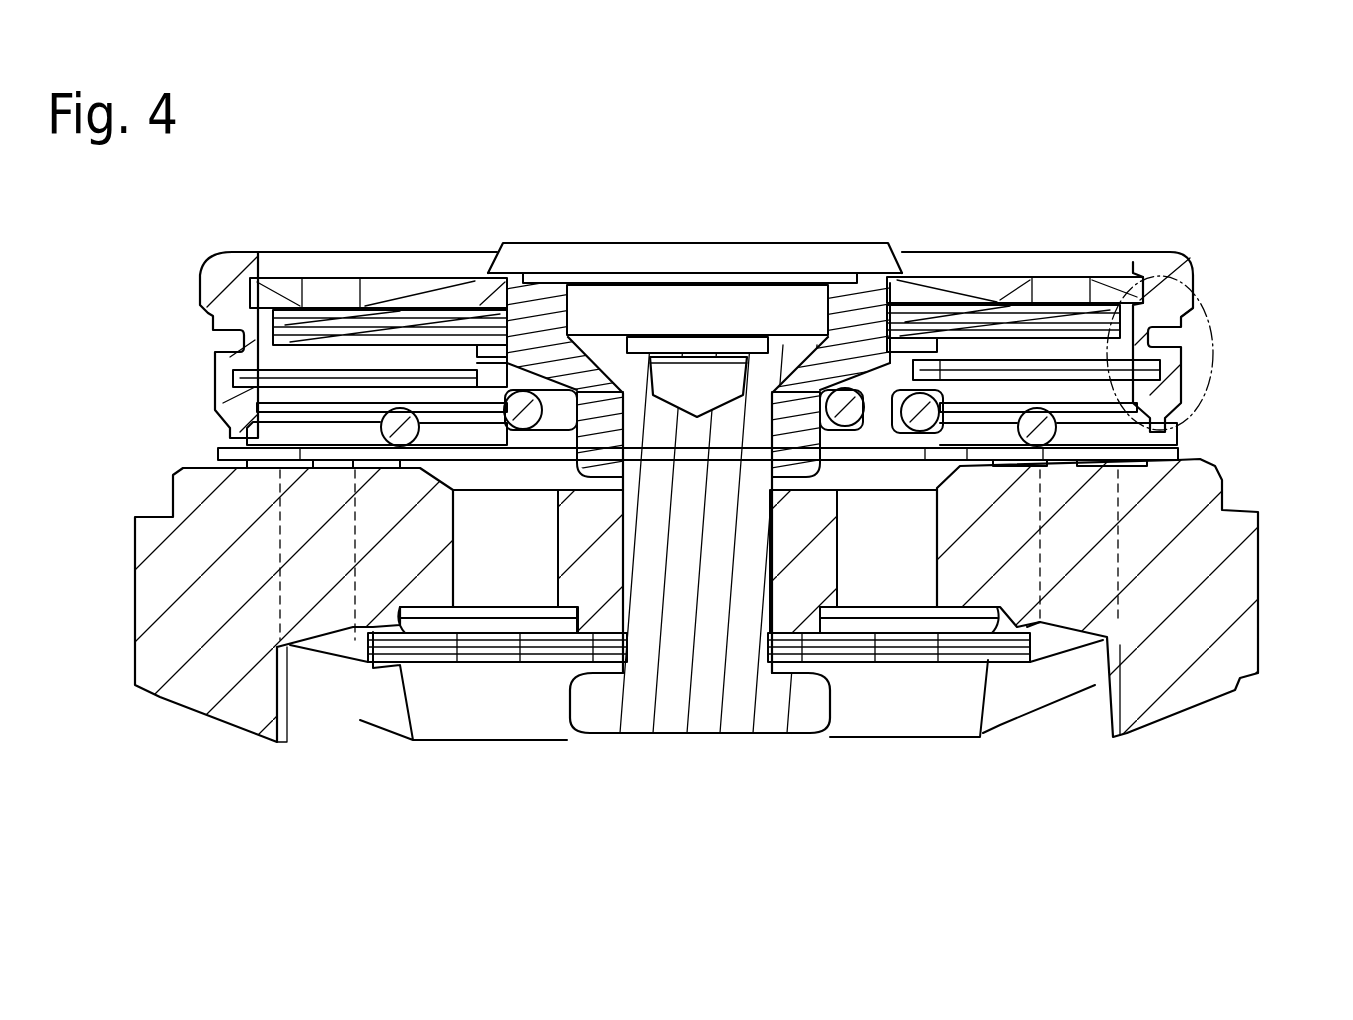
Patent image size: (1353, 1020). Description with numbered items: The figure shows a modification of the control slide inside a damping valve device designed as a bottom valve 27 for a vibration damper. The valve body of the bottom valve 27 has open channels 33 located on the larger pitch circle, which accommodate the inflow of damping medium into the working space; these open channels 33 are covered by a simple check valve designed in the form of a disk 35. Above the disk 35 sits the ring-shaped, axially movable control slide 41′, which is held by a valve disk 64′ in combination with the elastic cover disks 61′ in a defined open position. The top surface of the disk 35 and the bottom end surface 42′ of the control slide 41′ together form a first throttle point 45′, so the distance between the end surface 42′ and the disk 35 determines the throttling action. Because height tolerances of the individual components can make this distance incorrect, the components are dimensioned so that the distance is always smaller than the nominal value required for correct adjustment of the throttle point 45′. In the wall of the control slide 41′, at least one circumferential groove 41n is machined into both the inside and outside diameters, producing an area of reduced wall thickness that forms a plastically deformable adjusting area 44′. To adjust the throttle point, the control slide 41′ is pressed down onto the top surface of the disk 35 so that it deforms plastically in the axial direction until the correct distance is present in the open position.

The bottom valve 27 is at (730, 175).
The valve disk 64′ is at (970, 290).
The elastic cover disks 61′ is at (1045, 312).
The control slide 41′ is at (1213, 238).
The plastically deformable adjusting area 44′ is at (1200, 308).
The circumferential groove 41n is at (1165, 336).
The end surface 42′ is at (1160, 441).
The first throttle point 45′ is at (240, 448).
The disk 35 is at (215, 458).
The open channels 33 is at (1090, 590).